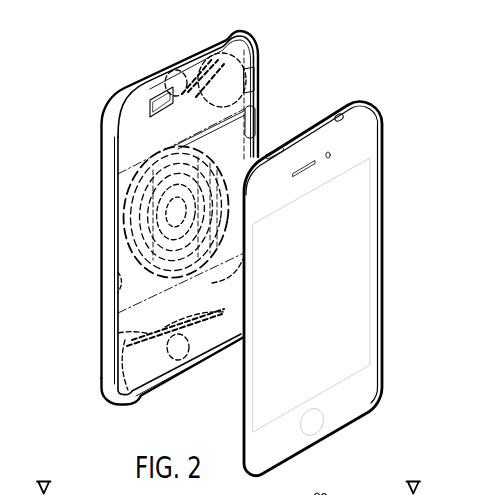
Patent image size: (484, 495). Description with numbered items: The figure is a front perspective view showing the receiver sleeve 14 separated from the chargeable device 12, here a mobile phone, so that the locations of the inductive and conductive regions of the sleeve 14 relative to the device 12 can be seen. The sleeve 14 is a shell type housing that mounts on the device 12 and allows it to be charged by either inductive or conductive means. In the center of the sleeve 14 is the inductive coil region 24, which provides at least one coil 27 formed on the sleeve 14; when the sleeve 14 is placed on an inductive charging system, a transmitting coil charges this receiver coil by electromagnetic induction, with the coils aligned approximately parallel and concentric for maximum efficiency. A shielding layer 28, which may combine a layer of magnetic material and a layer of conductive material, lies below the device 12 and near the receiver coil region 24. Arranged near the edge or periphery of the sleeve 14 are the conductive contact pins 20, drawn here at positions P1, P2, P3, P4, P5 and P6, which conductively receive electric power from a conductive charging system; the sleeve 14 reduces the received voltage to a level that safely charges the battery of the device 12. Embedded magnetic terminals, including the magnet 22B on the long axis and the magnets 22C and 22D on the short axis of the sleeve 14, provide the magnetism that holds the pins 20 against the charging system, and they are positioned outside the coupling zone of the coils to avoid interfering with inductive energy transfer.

The chargeable device 12 is at (357, 103).
The receiver sleeve 14 is at (114, 90).
The contact pins 20 is at (262, 87).
The magnet 22B is at (120, 283).
The magnet 22C is at (178, 62).
The magnet 22D is at (180, 358).
The inductive coil region 24 is at (133, 173).
The coil 27 is at (258, 132).
The shielding layer 28 is at (250, 253).
The position P1 is at (205, 43).
The position P2 is at (258, 52).
The position P3 is at (244, 310).
The position P4 is at (244, 340).
The position P5 is at (118, 143).
The position P6 is at (118, 392).